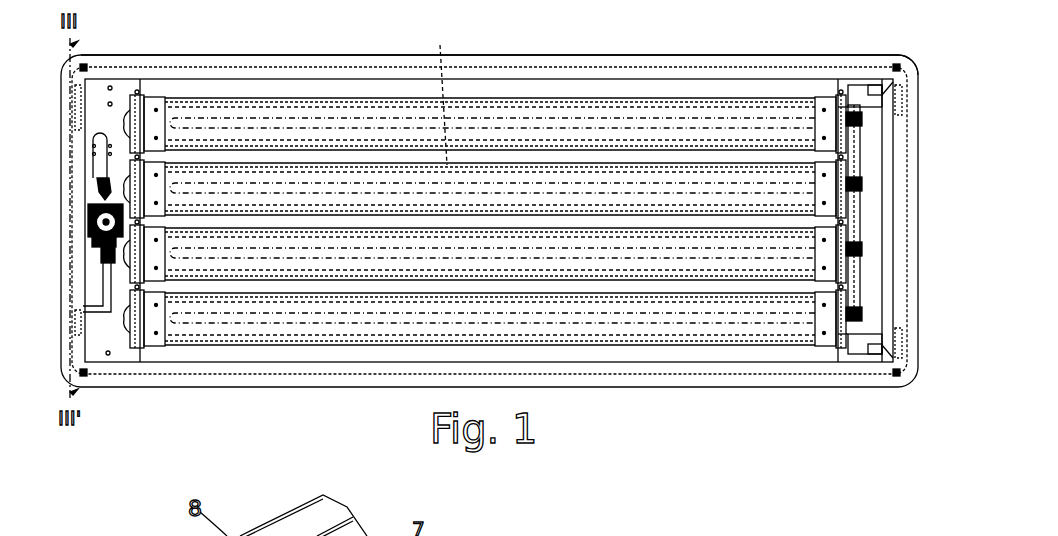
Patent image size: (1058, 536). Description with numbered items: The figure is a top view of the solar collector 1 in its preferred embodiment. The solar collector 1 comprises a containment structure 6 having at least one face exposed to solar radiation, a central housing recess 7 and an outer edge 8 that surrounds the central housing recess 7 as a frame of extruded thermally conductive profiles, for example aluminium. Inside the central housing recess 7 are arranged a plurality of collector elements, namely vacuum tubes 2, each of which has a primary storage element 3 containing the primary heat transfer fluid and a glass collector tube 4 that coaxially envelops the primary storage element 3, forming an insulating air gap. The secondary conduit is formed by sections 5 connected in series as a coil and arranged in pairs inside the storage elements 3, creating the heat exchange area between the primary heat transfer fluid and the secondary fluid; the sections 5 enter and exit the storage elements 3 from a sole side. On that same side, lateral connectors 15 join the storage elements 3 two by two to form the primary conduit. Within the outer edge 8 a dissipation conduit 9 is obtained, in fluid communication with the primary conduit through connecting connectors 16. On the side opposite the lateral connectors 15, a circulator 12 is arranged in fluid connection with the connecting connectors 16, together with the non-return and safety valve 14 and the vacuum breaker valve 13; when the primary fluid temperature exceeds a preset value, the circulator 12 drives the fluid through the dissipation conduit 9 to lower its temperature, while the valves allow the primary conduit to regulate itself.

The solar collector 1 is at (646, 38).
The vacuum tube 2 is at (588, 164).
The primary storage element 3 is at (437, 92).
The collector tube 4 is at (248, 163).
The section 5 is at (218, 135).
The containment structure 6 is at (857, 55).
The central housing recess 7 is at (735, 90).
The outer edge 8 is at (790, 55).
The dissipation conduit 9 is at (98, 68).
The circulator 12 is at (90, 230).
The vacuum breaker valve 13 is at (100, 260).
The non-return and safety valve 14 is at (103, 188).
The lateral connector 15 is at (860, 160).
The connecting connector 16 is at (900, 86).